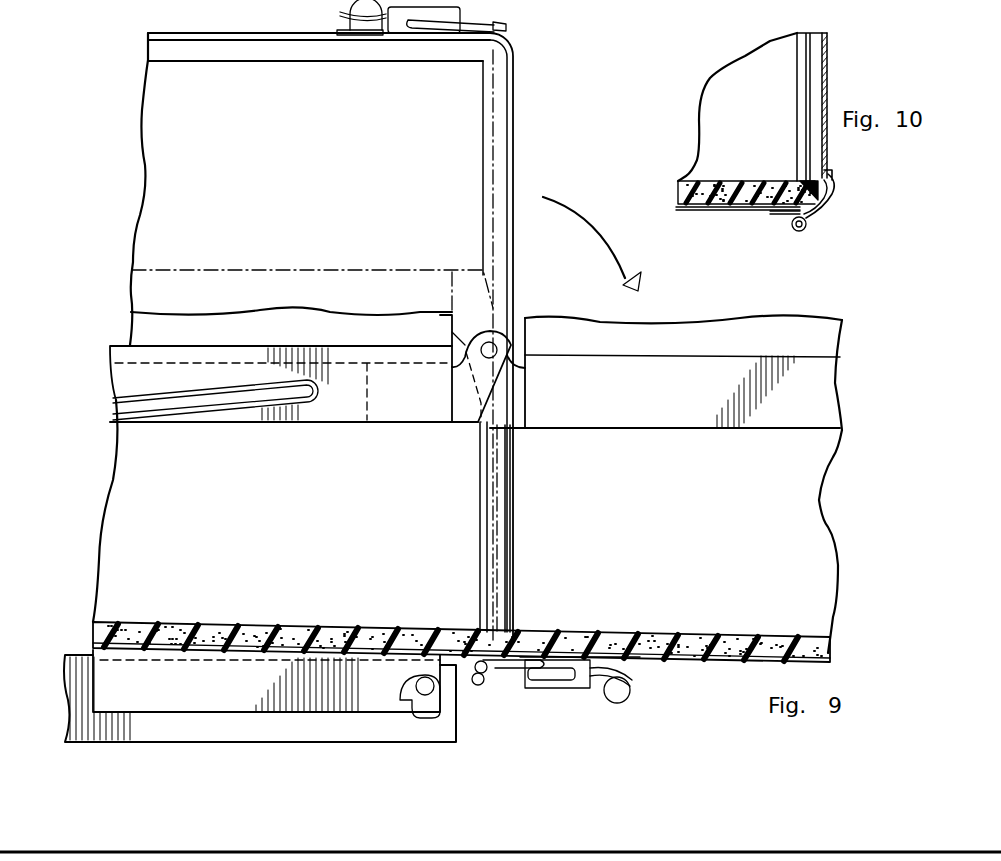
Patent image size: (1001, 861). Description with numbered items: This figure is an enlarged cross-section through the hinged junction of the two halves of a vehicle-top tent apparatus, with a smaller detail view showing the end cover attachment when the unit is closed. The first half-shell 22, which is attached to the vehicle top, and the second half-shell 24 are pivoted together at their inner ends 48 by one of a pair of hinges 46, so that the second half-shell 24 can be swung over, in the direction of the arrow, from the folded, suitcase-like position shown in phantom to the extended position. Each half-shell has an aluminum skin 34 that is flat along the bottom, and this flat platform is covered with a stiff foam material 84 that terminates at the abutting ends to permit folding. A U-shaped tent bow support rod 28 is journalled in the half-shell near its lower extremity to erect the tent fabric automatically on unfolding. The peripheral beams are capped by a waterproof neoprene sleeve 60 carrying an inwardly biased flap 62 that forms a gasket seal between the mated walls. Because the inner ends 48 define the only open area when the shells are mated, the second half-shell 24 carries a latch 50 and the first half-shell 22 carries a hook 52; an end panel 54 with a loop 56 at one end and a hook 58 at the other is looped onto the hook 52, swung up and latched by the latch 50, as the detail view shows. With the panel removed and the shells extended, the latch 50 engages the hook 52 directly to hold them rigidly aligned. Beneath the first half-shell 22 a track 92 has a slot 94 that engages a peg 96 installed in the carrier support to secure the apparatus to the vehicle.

In FIG. 9, the first half-shell 22 is at (112, 483).
In FIG. 9, the second half-shell 24 is at (226, 31).
In FIG. 9, the tent bow support rod 28 is at (178, 407).
In FIG. 9, the skin 34 is at (604, 0).
In FIG. 10, the skin 34 is at (716, 210).
In FIG. 9, the hinge 46 is at (495, 342).
In FIG. 9, the inner end of half-shell 48 is at (496, 540).
In FIG. 10, the inner end of half-shell 48 is at (810, 55).
In FIG. 9, the latch 50 is at (446, 11).
In FIG. 9, the hook 52 is at (477, 685).
In FIG. 10, the hook 52 is at (800, 232).
In FIG. 9, the end panel 54 is at (515, 140).
In FIG. 10, the end panel 54 is at (829, 75).
In FIG. 9, the loop 56 is at (497, 670).
In FIG. 10, the loop 56 is at (824, 210).
In FIG. 9, the hook 58 is at (510, 28).
In FIG. 9, the sleeve 60 is at (697, 421).
In FIG. 9, the flap 62 is at (826, 338).
In FIG. 9, the stiff foam material 84 is at (368, 628).
In FIG. 9, the track 92 is at (233, 675).
In FIG. 9, the slot 94 is at (402, 681).
In FIG. 9, the peg 96 is at (425, 694).